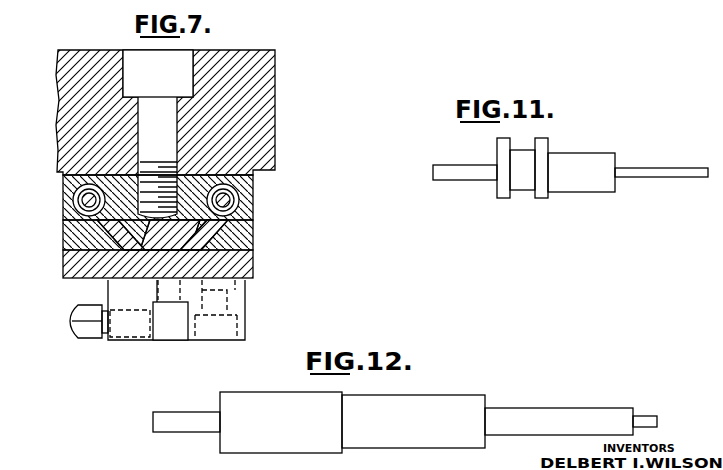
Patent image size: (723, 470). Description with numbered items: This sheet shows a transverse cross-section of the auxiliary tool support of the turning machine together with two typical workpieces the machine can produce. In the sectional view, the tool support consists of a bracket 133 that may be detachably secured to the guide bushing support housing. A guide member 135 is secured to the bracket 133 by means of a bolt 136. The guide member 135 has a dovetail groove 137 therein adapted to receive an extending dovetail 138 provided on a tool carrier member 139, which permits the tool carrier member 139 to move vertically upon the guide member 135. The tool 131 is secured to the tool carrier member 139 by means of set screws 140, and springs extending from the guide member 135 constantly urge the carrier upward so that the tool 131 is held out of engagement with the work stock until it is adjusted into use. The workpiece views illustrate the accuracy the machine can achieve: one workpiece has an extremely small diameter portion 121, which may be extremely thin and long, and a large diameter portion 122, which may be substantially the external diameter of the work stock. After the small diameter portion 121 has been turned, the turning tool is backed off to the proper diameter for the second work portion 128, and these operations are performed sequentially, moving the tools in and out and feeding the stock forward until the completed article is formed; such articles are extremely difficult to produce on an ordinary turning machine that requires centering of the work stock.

In FIG. 7, the bracket 133 is at (270, 78).
In FIG. 7, the bolt 136 is at (160, 82).
In FIG. 7, the guide member 135 is at (253, 218).
In FIG. 7, the dovetail groove 137 is at (192, 241).
In FIG. 7, the extending dovetail 138 is at (123, 238).
In FIG. 7, the tool carrier member 139 is at (254, 283).
In FIG. 7, the tool 131 is at (167, 337).
In FIG. 7, the set screws 140 is at (86, 340).
In FIG. 11, the large diameter portion 122 is at (558, 132).
In FIG. 11, the second work portion 128 is at (611, 158).
In FIG. 11, the small diameter portion 121 is at (683, 150).